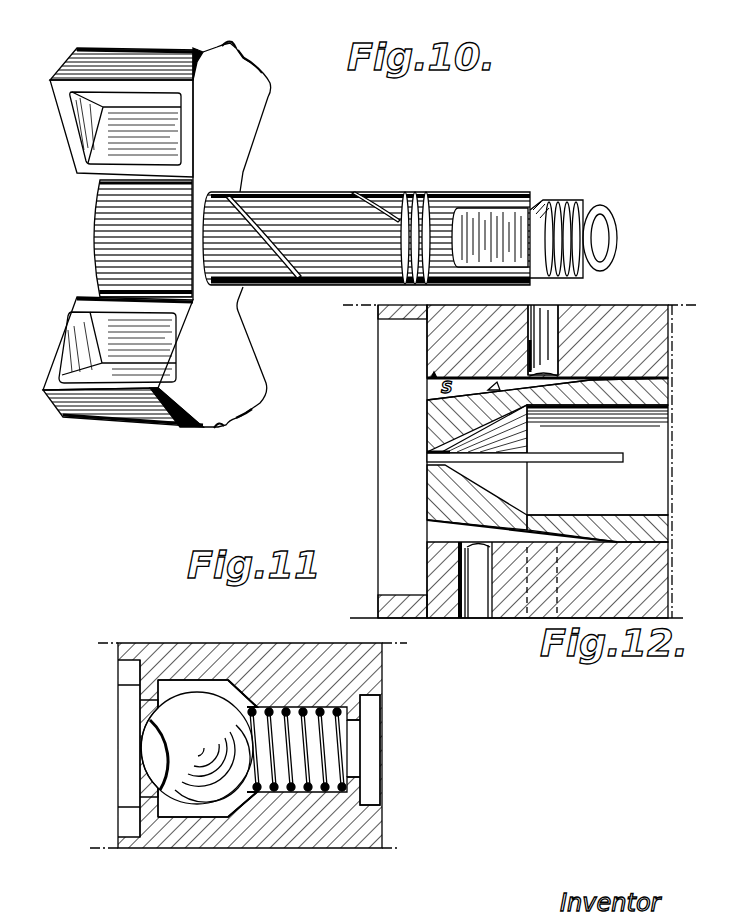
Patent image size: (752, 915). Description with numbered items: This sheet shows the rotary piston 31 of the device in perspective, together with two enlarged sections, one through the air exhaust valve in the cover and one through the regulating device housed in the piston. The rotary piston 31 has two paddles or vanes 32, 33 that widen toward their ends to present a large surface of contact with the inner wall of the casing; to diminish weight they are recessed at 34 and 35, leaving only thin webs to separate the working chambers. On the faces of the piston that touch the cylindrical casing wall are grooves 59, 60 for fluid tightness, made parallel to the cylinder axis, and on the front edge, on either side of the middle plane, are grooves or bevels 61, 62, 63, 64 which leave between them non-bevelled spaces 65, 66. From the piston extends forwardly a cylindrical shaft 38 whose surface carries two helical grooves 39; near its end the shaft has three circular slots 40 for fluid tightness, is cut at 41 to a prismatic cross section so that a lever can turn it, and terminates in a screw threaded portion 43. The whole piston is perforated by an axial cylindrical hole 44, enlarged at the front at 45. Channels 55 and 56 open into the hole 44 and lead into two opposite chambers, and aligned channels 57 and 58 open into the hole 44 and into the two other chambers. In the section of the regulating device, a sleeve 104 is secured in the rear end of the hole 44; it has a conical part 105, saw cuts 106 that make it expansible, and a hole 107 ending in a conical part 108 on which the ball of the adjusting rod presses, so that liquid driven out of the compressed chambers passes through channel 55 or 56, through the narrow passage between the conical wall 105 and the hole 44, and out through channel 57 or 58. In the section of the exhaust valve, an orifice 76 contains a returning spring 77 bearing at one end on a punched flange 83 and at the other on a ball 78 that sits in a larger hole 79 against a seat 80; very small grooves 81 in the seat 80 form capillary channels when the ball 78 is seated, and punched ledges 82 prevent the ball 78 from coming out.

In FIG. 10, the rotary piston 31 is at (92, 222).
In FIG. 10, the vane 32 is at (242, 138).
In FIG. 10, the vane 33 is at (250, 377).
In FIG. 10, the recess 34 is at (113, 118).
In FIG. 10, the recess 35 is at (73, 337).
In FIG. 10, the cylindrical shaft 38 is at (302, 192).
In FIG. 10, the helical grooves 39 is at (363, 192).
In FIG. 10, the circular slots 40 is at (422, 192).
In FIG. 10, the prismatic cut 41 is at (485, 222).
In FIG. 10, the screw threaded portion 43 is at (600, 202).
In FIG. 12, the axial cylindrical hole 44 is at (430, 380).
In FIG. 10, the enlargement 45 is at (602, 237).
In FIG. 12, the channel 55 is at (548, 310).
In FIG. 12, the channel 56 is at (553, 613).
In FIG. 12, the channel 57 is at (520, 302).
In FIG. 12, the channel 58 is at (468, 614).
In FIG. 10, the fluid-tightness groove 59 is at (125, 52).
In FIG. 10, the fluid-tightness groove 60 is at (90, 427).
In FIG. 10, the bevel 61 is at (200, 50).
In FIG. 10, the bevel 62 is at (241, 60).
In FIG. 10, the bevel 63 is at (160, 428).
In FIG. 10, the bevel 64 is at (240, 414).
In FIG. 10, the non-bevelled space 65 is at (236, 37).
In FIG. 10, the non-bevelled space 66 is at (220, 428).
In FIG. 11, the orifice 76 is at (300, 790).
In FIG. 11, the returning spring 77 is at (268, 713).
In FIG. 11, the ball 78 is at (203, 697).
In FIG. 11, the hole 79 is at (177, 680).
In FIG. 11, the seat 80 is at (243, 708).
In FIG. 11, the grooves 81 is at (233, 803).
In FIG. 11, the ledges 82 is at (148, 795).
In FIG. 11, the flange 83 is at (353, 722).
In FIG. 12, the sleeve 104 is at (642, 393).
In FIG. 12, the conical part 105 is at (483, 400).
In FIG. 12, the saw cuts 106 is at (513, 458).
In FIG. 12, the hole 107 is at (647, 515).
In FIG. 12, the conical part 108 is at (480, 477).